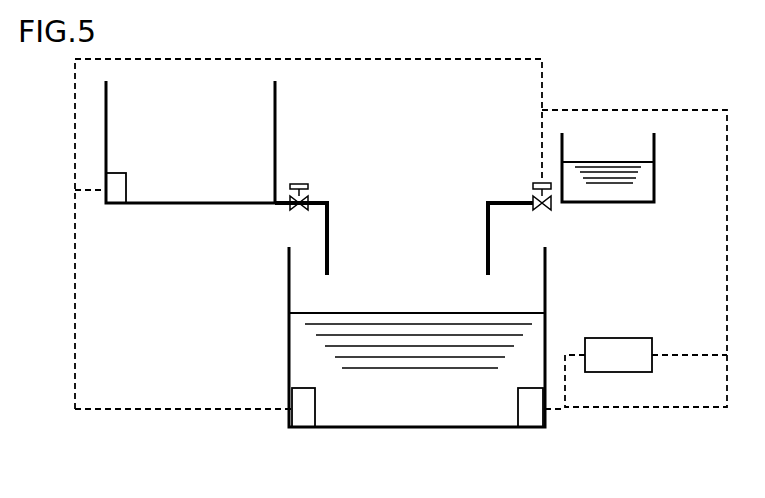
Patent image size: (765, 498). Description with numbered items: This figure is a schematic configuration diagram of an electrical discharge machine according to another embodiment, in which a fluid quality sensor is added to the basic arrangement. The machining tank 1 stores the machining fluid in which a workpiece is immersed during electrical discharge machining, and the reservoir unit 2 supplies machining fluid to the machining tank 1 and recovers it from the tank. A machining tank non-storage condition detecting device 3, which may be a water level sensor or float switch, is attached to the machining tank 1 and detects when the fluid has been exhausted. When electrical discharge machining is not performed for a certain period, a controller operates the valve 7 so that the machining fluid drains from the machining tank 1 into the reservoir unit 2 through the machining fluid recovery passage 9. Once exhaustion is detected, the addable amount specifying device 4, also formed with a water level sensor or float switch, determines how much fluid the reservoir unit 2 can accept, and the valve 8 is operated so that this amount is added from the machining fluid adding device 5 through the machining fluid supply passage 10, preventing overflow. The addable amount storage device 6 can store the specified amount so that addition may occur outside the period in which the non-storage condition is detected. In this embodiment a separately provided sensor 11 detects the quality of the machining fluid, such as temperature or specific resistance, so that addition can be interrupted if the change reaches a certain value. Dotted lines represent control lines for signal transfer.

The machining tank 1 is at (277, 102).
The reservoir unit 2 is at (289, 290).
The machining tank non-storage condition detecting device 3 is at (124, 206).
The addable amount specifying device 4 is at (542, 430).
The machining fluid adding device 5 is at (655, 178).
The addable amount storage device 6 is at (602, 338).
The valve 7 is at (310, 184).
The valve 8 is at (533, 185).
The machining fluid recovery passage 9 is at (329, 224).
The machining fluid supply passage 10 is at (487, 224).
The sensor 11 is at (292, 398).